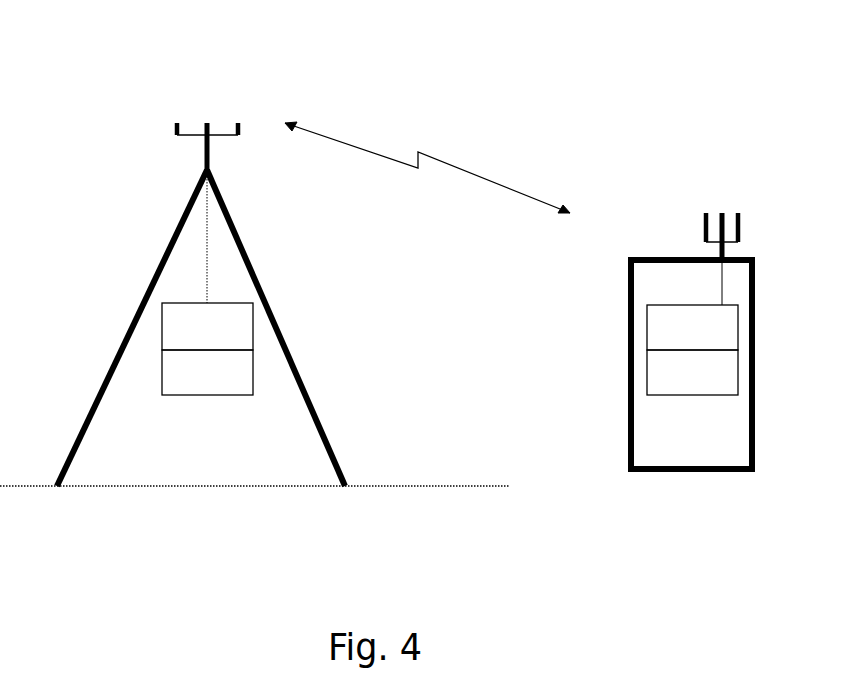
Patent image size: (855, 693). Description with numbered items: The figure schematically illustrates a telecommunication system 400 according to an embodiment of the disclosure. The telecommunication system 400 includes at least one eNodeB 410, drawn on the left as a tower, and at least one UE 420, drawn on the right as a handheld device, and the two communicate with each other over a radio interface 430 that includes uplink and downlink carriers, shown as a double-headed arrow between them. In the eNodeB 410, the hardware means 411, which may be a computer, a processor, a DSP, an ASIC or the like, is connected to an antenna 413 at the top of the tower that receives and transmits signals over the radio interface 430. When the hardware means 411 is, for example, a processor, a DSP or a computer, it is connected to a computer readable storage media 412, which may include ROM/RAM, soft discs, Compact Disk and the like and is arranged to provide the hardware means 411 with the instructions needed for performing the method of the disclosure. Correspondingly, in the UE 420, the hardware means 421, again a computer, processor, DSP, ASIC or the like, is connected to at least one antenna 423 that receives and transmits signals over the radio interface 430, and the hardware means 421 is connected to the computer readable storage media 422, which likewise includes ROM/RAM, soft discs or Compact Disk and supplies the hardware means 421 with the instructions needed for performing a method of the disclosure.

The telecommunication system 400 is at (598, 55).
The eNodeB 410 is at (201, 304).
The hardware means 411 is at (207, 326).
The computer readable storage media 412 is at (207, 372).
The antenna 413 is at (174, 147).
The UE 420 is at (691, 322).
The hardware means 421 is at (692, 327).
The computer readable storage media 422 is at (692, 372).
The antenna 423 is at (713, 218).
The radio interface 430 is at (427, 167).